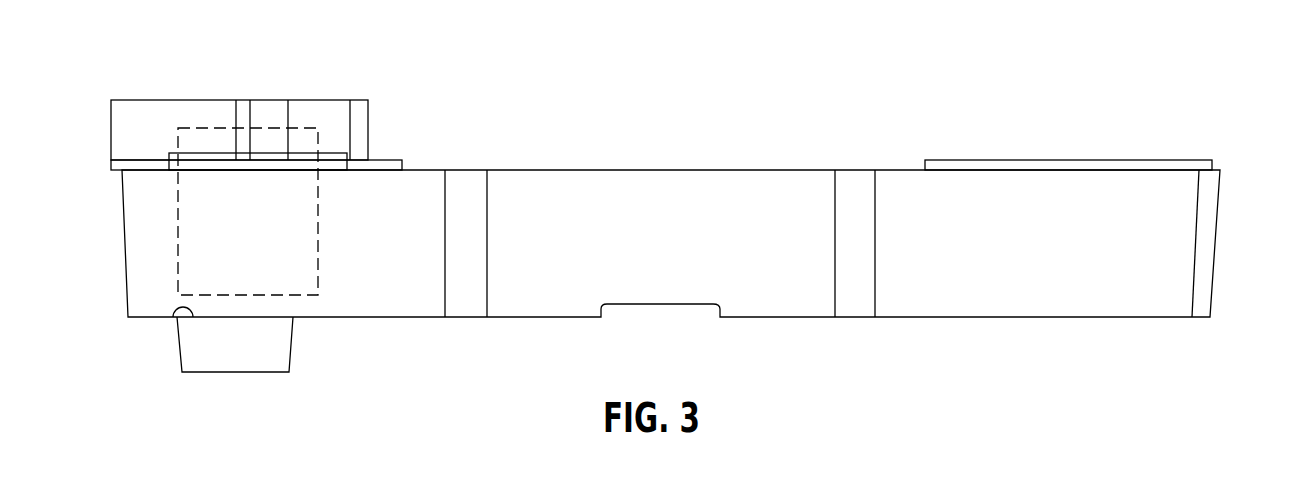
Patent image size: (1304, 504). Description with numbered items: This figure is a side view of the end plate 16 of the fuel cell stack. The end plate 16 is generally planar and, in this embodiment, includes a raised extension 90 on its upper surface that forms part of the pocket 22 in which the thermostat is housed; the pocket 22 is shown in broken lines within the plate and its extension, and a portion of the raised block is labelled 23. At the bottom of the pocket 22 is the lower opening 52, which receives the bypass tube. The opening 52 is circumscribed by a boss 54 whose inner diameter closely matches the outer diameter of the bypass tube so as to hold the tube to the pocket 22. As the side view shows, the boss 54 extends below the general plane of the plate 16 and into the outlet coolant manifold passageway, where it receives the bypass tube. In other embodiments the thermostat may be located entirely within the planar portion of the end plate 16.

The end plate 16 is at (704, 235).
The pocket 22 is at (286, 156).
The end portion of connector block 23 is at (405, 101).
The lower opening 52 is at (139, 338).
The boss 54 is at (274, 362).
The raised extension 90 is at (215, 98).